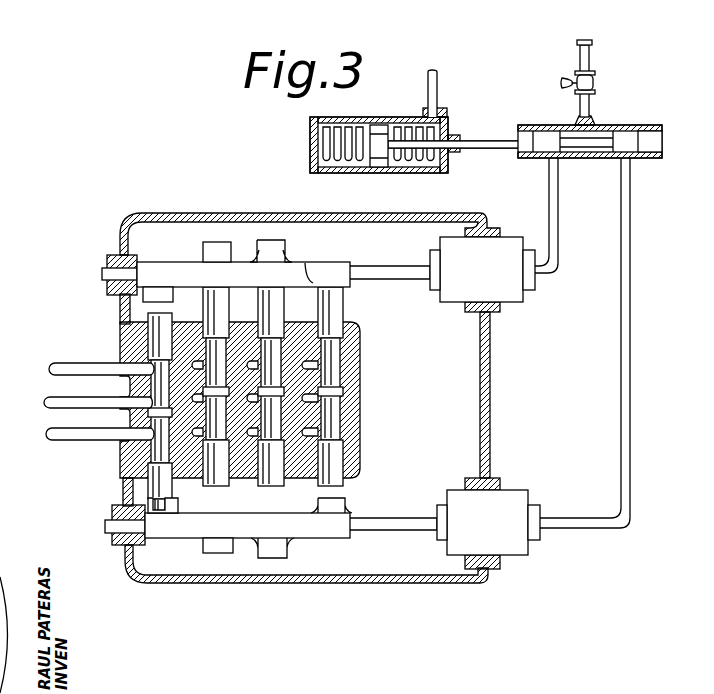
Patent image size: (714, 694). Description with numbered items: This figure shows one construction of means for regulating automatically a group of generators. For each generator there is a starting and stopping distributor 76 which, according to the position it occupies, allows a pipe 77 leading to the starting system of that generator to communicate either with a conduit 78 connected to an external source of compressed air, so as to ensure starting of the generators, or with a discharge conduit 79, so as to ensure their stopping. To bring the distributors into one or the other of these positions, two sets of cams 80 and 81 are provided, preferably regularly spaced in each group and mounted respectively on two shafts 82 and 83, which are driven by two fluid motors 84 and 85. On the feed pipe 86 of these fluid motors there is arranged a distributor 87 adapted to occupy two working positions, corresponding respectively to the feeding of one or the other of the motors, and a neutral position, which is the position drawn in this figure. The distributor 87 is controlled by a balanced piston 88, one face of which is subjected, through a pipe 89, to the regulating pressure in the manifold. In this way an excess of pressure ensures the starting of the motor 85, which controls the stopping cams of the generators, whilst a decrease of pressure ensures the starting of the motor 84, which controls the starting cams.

The starting and stopping distributor 76 is at (160, 492).
The pipe 77 is at (63, 402).
The conduit 78 is at (62, 435).
The discharge conduit 79 is at (70, 368).
The set of cams 80 is at (272, 560).
The set of cams 81 is at (222, 250).
The shaft 82 is at (172, 525).
The shaft 83 is at (165, 272).
The fluid motor 84 is at (515, 542).
The fluid motor 85 is at (510, 288).
The feed pipe 86 is at (586, 110).
The distributor 87 is at (634, 150).
The balanced piston 88 is at (379, 128).
The pipe 89 is at (437, 95).